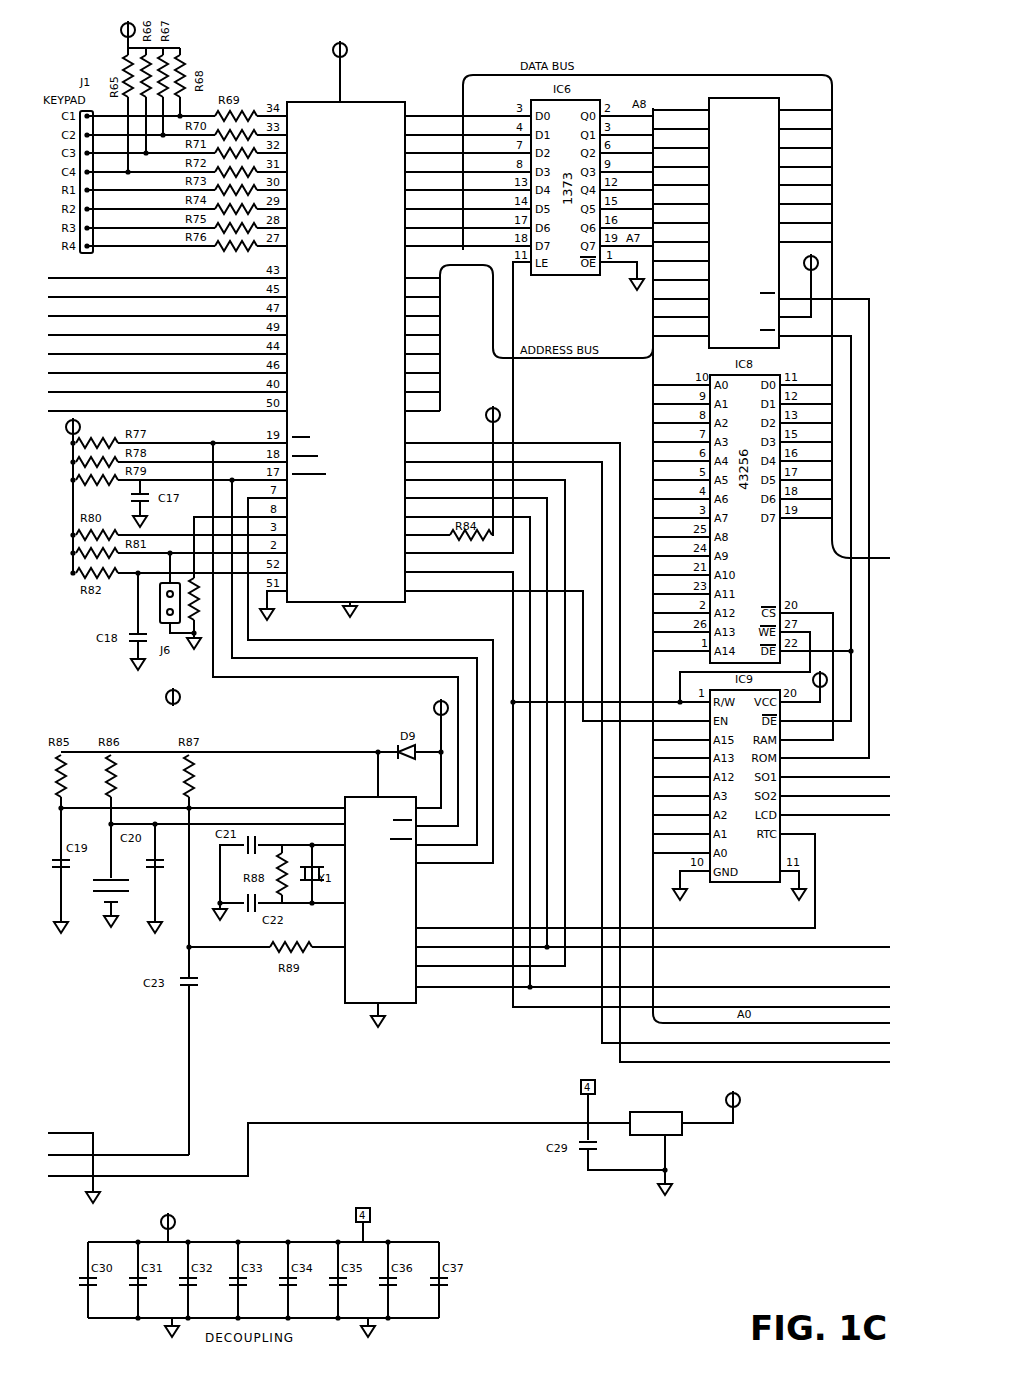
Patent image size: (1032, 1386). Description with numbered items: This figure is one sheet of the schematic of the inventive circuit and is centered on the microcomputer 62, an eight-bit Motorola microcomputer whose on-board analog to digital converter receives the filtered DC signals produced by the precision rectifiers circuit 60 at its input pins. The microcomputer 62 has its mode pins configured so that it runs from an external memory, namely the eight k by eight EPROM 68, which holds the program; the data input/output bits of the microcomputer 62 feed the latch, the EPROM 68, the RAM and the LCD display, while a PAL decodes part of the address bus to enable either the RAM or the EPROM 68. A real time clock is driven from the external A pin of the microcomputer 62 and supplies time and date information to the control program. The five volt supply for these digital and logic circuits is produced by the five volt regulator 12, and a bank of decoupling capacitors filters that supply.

The microcomputer 62 is at (308, 100).
The IC7 external memory 68 is at (760, 98).
The precision rectifiers circuit 60 is at (352, 1003).
The IC16 5 volt regulator 12 is at (685, 1138).